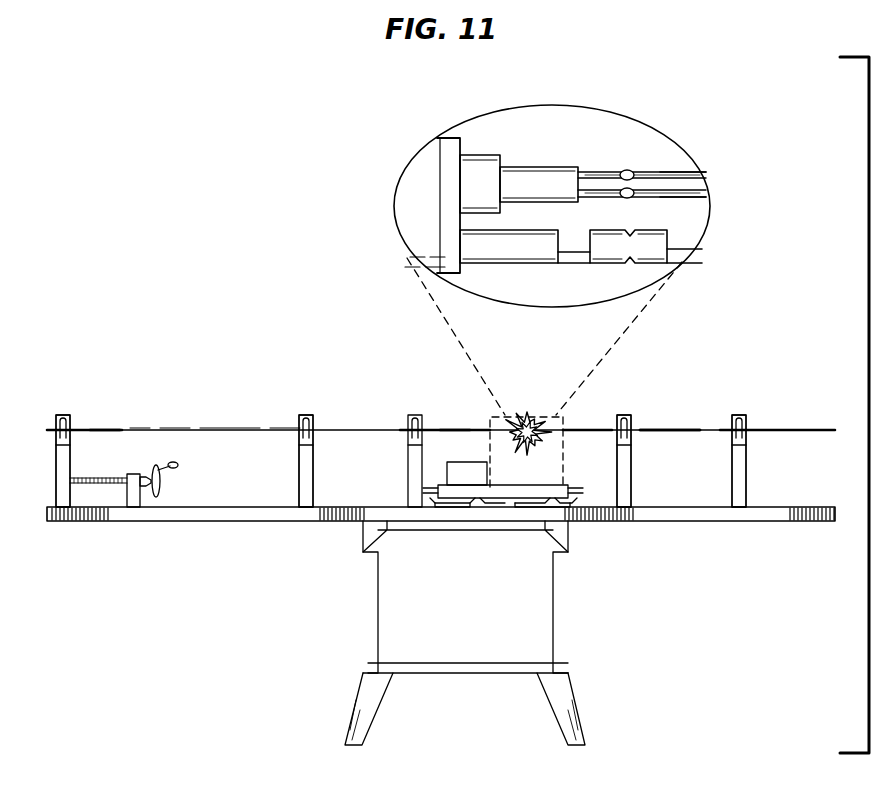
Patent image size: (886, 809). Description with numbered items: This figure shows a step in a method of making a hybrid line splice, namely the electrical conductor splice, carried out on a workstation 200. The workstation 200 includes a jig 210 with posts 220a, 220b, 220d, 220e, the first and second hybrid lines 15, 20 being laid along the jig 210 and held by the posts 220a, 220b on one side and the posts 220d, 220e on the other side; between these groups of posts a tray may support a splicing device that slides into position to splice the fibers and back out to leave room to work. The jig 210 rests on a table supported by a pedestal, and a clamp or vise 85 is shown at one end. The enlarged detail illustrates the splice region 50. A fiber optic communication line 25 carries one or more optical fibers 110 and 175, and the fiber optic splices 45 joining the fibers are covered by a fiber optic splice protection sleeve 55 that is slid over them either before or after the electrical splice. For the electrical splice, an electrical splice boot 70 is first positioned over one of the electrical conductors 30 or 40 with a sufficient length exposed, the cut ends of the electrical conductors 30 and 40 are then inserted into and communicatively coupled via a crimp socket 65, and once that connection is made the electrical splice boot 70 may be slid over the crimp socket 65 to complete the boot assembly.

The first hybrid line 15 is at (414, 214).
The second hybrid line 20 is at (647, 429).
The fiber optic communication line 25 is at (480, 165).
The electrical conductor 30 is at (573, 252).
The electrical conductor 40 is at (687, 248).
The fiber optic splices 45 is at (628, 170).
The linkage assembly 50 is at (672, 223).
The fiber optic splice protection sleeve 55 is at (533, 173).
The crimp socket 65 is at (640, 255).
The electrical splice boot 70 is at (510, 251).
The vise 85 is at (208, 429).
The optical fibers 110 is at (592, 170).
The optical fibers 175 is at (667, 172).
The workstation 200 is at (270, 574).
The jig 210 is at (800, 506).
The post 220a is at (60, 428).
The post 220b is at (303, 428).
The post 220d is at (624, 437).
The post 220e is at (742, 430).